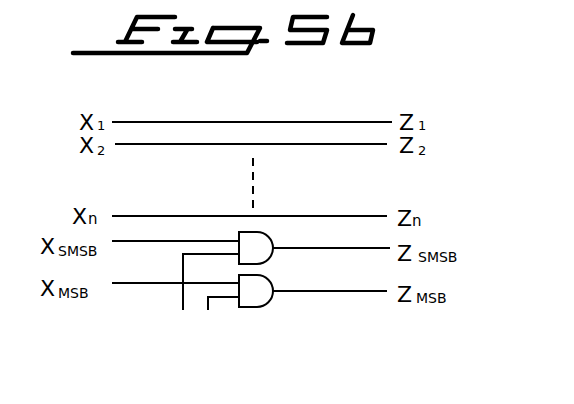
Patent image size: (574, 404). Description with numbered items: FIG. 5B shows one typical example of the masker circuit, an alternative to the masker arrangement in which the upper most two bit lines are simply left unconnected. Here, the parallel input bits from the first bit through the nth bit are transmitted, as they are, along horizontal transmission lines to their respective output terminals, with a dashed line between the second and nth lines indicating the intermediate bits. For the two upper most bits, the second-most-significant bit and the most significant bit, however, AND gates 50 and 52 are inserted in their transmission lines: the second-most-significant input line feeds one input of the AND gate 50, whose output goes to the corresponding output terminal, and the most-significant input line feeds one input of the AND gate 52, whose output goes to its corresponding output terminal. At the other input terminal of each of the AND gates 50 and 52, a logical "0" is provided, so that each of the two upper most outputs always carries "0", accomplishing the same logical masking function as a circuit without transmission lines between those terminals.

The AND gate 50 is at (270, 245).
The AND gate 52 is at (272, 285).
The logic zero input 0 is at (201, 297).